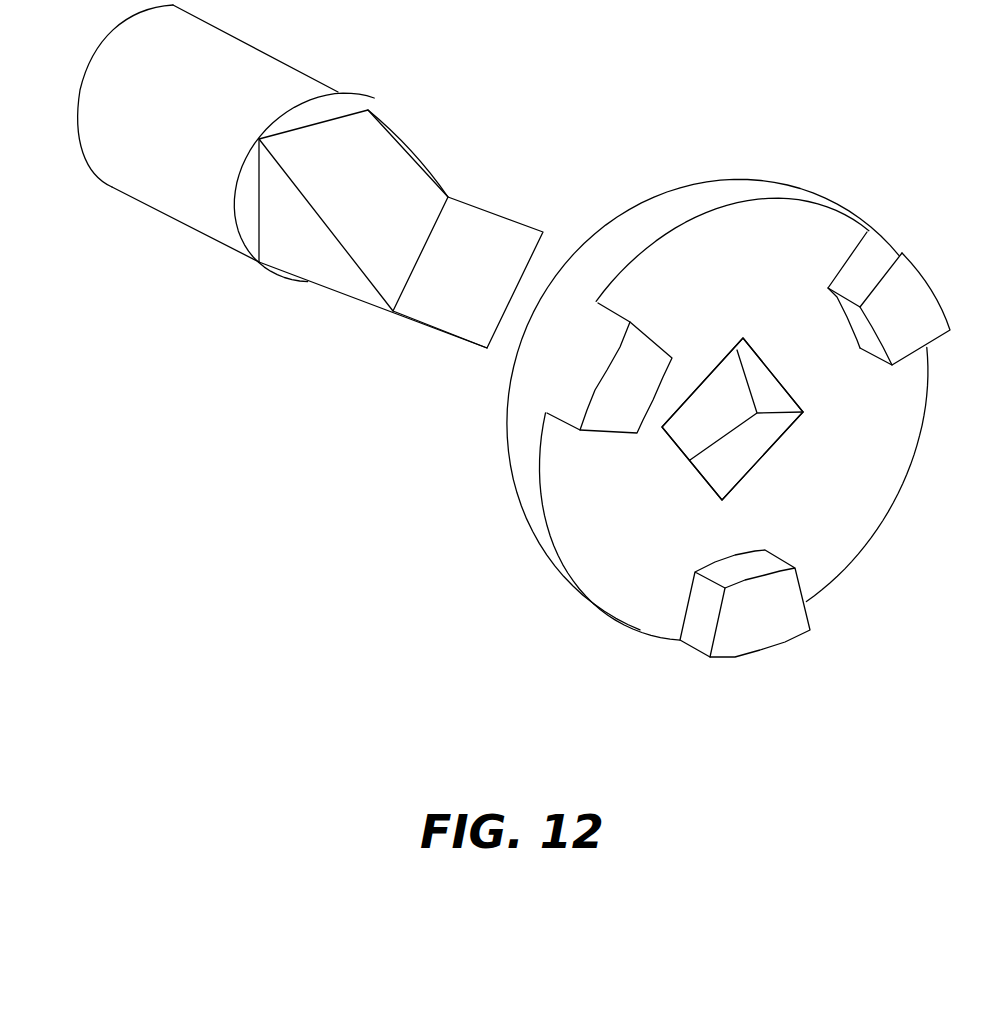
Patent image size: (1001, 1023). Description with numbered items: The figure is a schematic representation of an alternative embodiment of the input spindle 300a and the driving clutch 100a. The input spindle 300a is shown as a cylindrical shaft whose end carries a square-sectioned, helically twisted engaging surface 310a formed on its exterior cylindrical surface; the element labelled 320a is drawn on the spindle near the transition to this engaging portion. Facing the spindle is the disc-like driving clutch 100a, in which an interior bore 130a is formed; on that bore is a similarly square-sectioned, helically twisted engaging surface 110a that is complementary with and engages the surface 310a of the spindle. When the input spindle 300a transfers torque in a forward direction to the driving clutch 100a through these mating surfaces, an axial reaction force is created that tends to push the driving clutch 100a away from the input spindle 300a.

The driving clutch 100a is at (557, 588).
The helically twisted engaging surface 110a is at (743, 455).
The interior bore 130a is at (713, 371).
The input spindle 300a is at (138, 203).
The helically twisted engaging surface 310a is at (340, 293).
The shaft end portion 320a is at (313, 76).